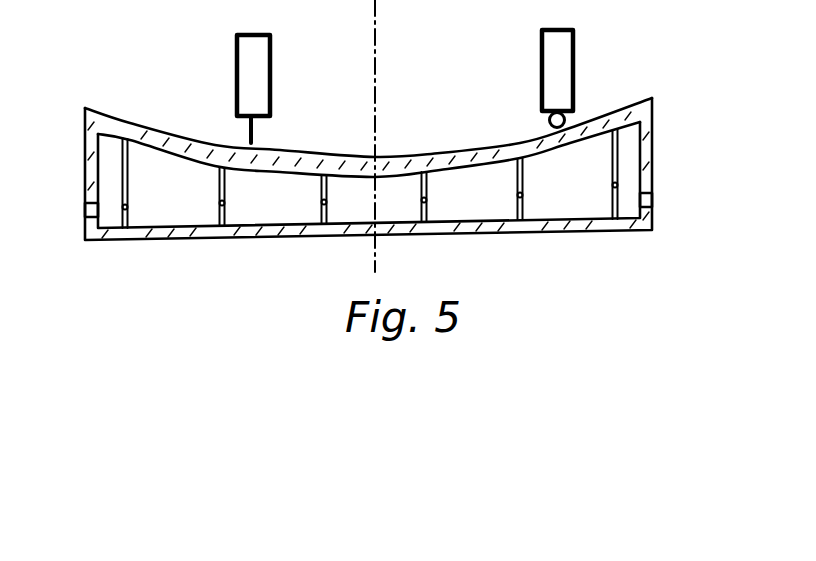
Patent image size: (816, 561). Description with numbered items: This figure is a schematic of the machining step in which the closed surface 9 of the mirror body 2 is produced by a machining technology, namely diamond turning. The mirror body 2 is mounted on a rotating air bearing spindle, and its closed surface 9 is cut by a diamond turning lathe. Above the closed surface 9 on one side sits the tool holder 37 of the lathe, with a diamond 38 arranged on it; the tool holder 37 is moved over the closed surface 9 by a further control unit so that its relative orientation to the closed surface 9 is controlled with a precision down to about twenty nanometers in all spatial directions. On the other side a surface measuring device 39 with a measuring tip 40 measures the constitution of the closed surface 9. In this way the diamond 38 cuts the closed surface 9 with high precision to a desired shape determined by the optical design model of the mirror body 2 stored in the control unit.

The mirror body 2 is at (391, 164).
The closed surface 9 is at (457, 152).
The tool holder 37 is at (575, 58).
The diamond 38 is at (543, 125).
The surface measuring device 39 is at (272, 70).
The measuring tip 40 is at (253, 133).